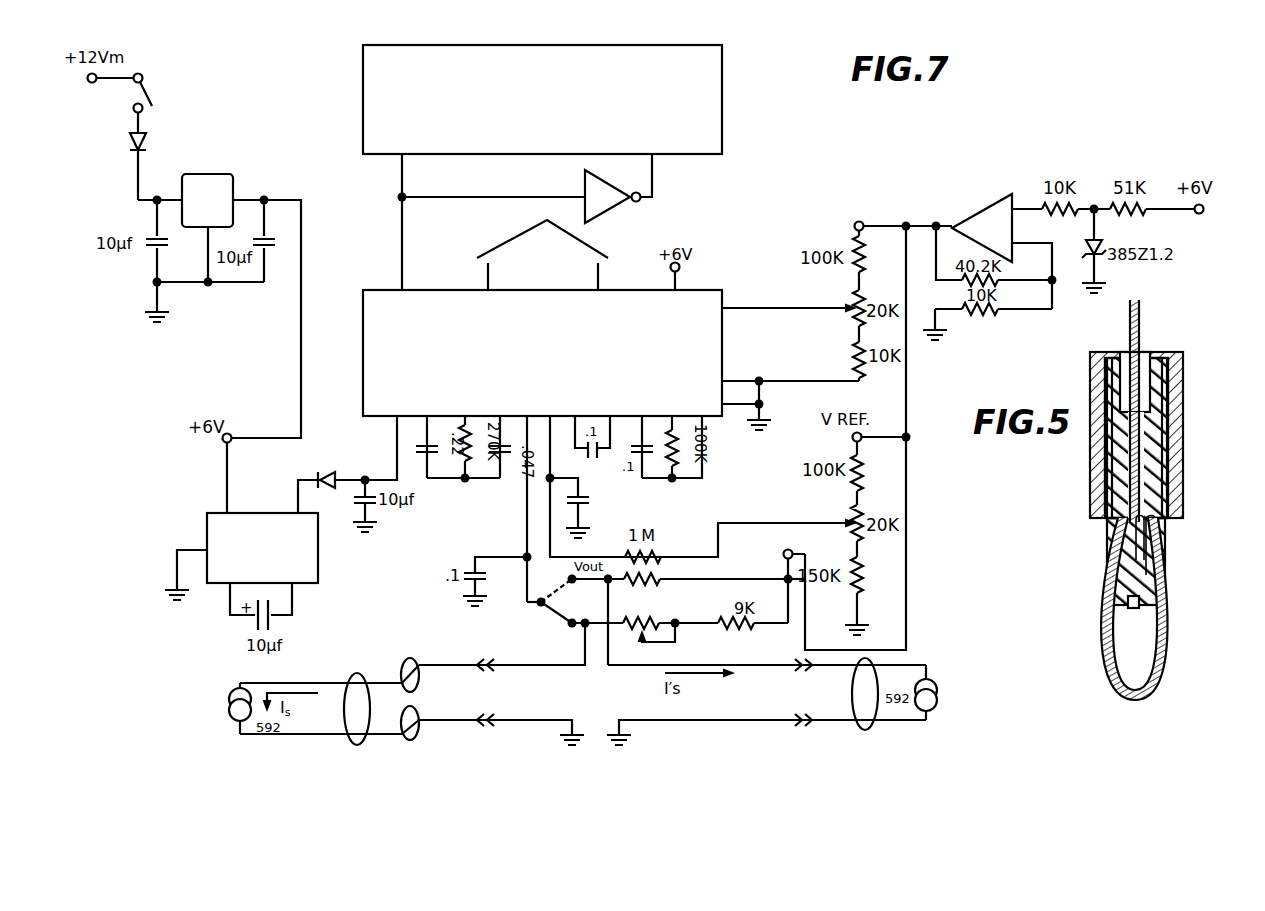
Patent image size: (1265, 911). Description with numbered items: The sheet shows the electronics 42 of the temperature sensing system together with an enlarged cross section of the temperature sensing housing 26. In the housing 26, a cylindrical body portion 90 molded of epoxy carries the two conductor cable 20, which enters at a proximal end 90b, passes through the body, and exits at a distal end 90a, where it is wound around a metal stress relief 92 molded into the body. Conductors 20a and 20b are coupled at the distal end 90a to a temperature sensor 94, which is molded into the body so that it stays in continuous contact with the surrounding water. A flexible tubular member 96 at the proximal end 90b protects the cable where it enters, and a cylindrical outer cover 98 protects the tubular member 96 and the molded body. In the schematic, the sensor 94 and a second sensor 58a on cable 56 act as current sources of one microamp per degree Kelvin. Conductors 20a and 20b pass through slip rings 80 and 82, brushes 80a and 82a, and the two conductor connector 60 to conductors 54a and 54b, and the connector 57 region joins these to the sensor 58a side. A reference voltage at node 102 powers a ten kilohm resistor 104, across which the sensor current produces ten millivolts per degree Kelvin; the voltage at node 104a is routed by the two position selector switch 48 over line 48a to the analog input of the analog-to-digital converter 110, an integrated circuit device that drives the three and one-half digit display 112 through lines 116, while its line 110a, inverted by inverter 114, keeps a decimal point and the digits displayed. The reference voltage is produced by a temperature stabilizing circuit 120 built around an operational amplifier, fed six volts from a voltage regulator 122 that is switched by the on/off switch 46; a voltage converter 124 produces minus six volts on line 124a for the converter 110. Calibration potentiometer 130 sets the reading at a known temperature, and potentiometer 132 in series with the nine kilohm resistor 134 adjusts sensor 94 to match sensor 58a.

In FIG. 7, the electronics 42 is at (770, 60).
In FIG. 7, the on/off switch 46 is at (156, 90).
In FIG. 7, the voltage regulator 122 is at (212, 182).
In FIG. 7, the voltage converter 124 is at (277, 494).
In FIG. 7, the line 124a is at (397, 448).
In FIG. 7, the liquid crystal display 112 is at (703, 74).
In FIG. 7, the analog-to-digital converter 110 is at (656, 339).
In FIG. 7, the line 110a is at (402, 241).
In FIG. 7, the inverter 114 is at (614, 206).
In FIG. 7, the lines 116 is at (606, 265).
In FIG. 7, the temperature stabilizing circuit 120 is at (934, 189).
In FIG. 7, the calibration potentiometer 130 is at (840, 509).
In FIG. 7, the node 102 is at (784, 554).
In FIG. 7, the 10k ohm resistor 104 is at (662, 578).
In FIG. 7, the node 104a is at (606, 588).
In FIG. 7, the potentiometer 132 is at (669, 620).
In FIG. 7, the 9k ohm resistor 134 is at (737, 636).
In FIG. 7, the temperature probe selecting switch 48 is at (542, 598).
In FIG. 7, the line 48a is at (524, 514).
In FIG. 7, the two conductor connector 60 is at (482, 713).
In FIG. 7, the conductor 54a is at (515, 668).
In FIG. 7, the conductor 54b is at (506, 720).
In FIG. 7, the slip ring 80 is at (411, 659).
In FIG. 7, the brush 80a is at (422, 662).
In FIG. 7, the slip ring 82 is at (411, 739).
In FIG. 7, the brush 82a is at (423, 726).
In FIG. 7, the cable 20 is at (359, 676).
In FIG. 5, the cable 20 is at (1139, 328).
In FIG. 7, the conductor 20a is at (238, 685).
In FIG. 5, the conductor 20a is at (1160, 524).
In FIG. 7, the conductor 20b is at (240, 731).
In FIG. 5, the conductor 20b is at (1136, 525).
In FIG. 7, the temperature sensor 94 is at (227, 702).
In FIG. 5, the temperature sensor 94 is at (1136, 609).
In FIG. 7, the cable 56 is at (863, 730).
In FIG. 7, the reference cable conductors 57 is at (790, 716).
In FIG. 7, the temperature sensor 58a is at (935, 702).
In FIG. 5, the outer cover 98 is at (1172, 357).
In FIG. 5, the flexible tubular member 96 is at (1112, 367).
In FIG. 5, the cylindrical body portion 90 is at (1112, 472).
In FIG. 5, the distal end 90a is at (1107, 598).
In FIG. 5, the proximal end 90b is at (1158, 443).
In FIG. 5, the housing 26 is at (1199, 418).
In FIG. 5, the metal stress relief 92 is at (1128, 657).